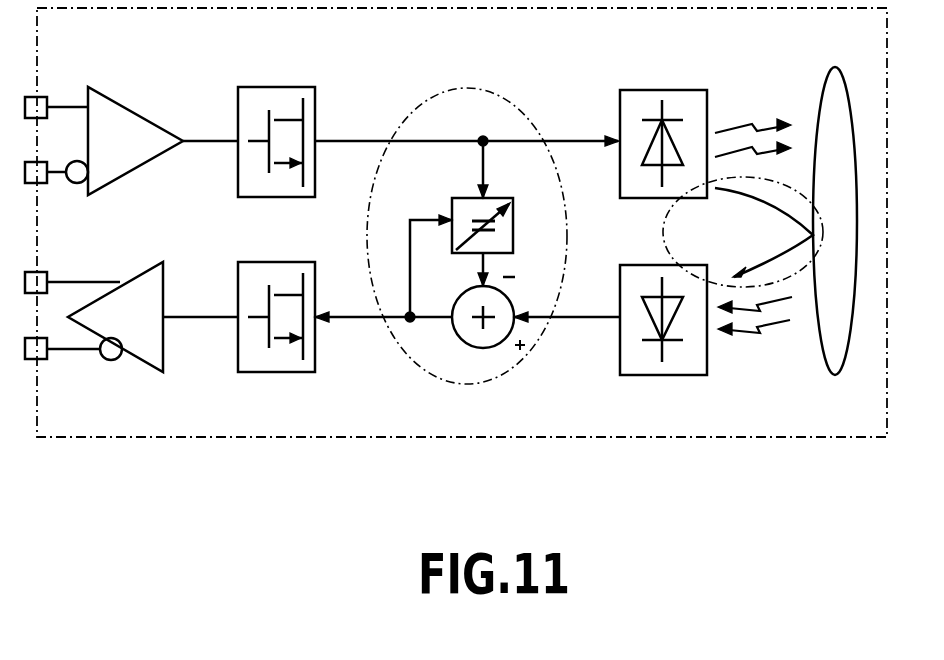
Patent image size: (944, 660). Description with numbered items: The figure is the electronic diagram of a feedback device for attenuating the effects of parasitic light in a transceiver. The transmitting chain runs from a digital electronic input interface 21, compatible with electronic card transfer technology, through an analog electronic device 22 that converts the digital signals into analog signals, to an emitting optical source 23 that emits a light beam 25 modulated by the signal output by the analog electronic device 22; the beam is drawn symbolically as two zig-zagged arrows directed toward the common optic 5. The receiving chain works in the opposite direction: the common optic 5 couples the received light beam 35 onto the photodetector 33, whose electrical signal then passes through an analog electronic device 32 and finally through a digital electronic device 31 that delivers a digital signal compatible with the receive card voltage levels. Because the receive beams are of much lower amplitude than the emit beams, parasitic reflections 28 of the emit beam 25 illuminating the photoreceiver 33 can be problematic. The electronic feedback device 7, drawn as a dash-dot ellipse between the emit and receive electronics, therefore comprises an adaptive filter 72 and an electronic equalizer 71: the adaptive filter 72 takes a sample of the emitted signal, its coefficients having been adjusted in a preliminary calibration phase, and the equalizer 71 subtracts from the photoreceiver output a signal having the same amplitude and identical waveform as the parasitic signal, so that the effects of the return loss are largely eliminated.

The common optic 5 is at (833, 117).
The electronic feedback device 7 is at (502, 99).
The digital electronic input interface 21 is at (123, 127).
The analog electronic device 22 is at (258, 102).
The emitting optical source 23 is at (640, 108).
The light beam 25 is at (770, 120).
The parasitic reflections 28 is at (752, 203).
The digital electronic device 31 is at (142, 340).
The analog electronic device 32 is at (258, 355).
The photodetector 33 is at (640, 355).
The received light beam 35 is at (763, 335).
The electronic equalizer 71 is at (483, 349).
The adaptive filter 72 is at (513, 235).